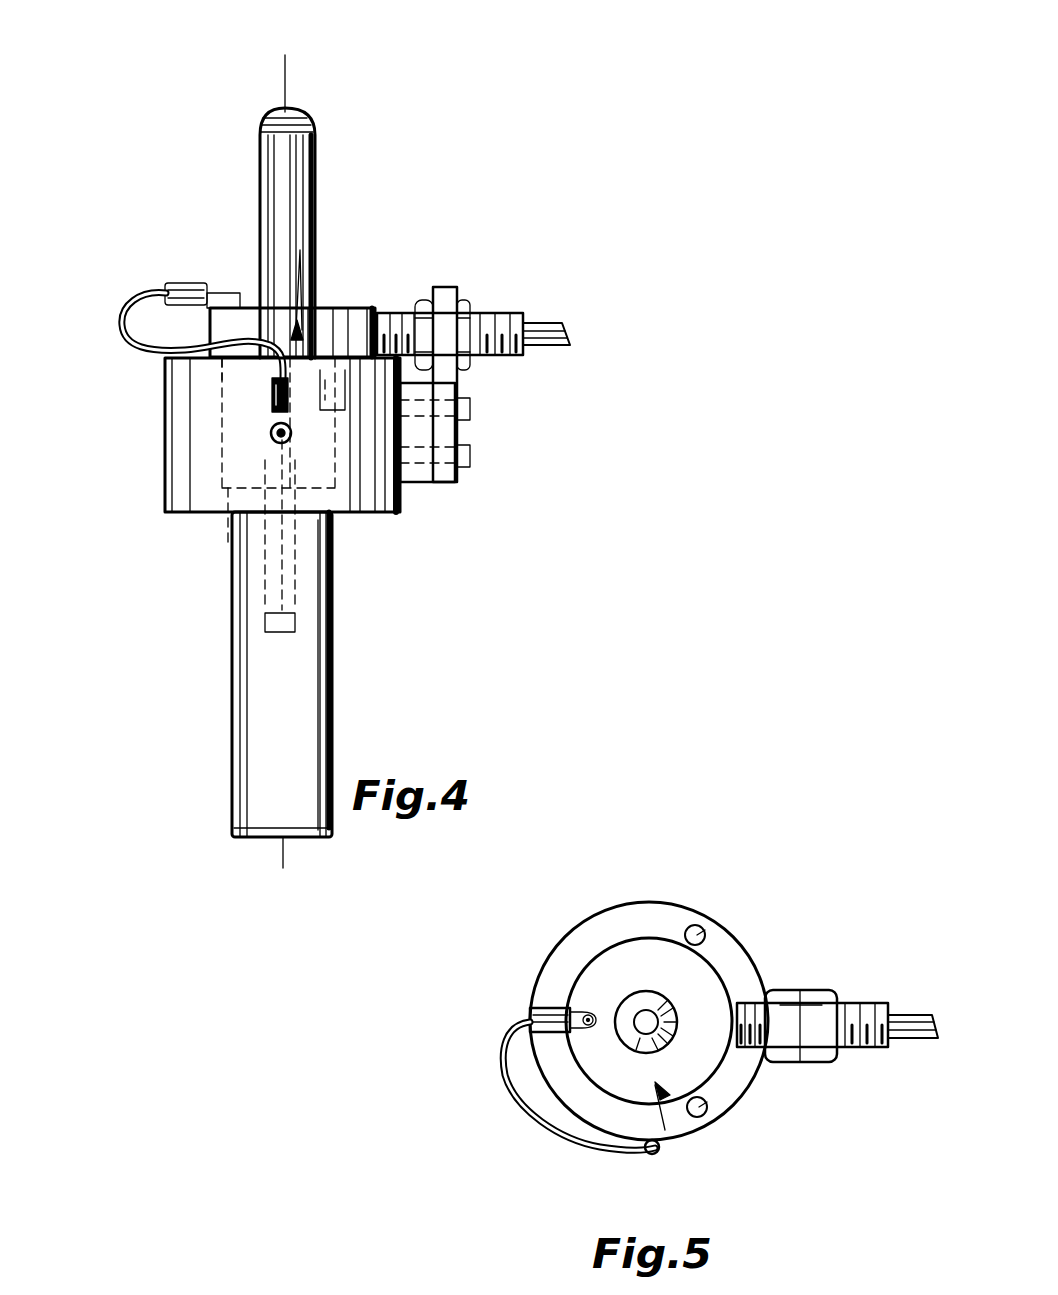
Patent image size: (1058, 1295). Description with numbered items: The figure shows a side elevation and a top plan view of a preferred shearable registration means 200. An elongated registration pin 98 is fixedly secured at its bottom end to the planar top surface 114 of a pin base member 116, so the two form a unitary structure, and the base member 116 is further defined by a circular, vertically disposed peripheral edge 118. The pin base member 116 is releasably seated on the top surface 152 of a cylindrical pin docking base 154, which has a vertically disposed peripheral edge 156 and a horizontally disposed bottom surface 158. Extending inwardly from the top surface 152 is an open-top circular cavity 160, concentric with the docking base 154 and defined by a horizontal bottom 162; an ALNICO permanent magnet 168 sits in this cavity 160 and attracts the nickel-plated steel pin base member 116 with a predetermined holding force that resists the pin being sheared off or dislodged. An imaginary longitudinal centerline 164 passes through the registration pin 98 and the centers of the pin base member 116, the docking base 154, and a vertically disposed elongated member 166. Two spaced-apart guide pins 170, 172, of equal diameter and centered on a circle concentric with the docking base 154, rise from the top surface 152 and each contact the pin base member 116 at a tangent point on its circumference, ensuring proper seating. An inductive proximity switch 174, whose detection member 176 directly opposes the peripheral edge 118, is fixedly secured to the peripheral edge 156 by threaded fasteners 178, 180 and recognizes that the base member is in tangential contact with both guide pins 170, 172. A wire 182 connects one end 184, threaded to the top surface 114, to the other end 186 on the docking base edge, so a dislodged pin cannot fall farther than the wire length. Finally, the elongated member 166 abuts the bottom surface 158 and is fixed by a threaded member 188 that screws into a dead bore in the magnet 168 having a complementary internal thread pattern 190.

In FIG. 4, the registration pin 98 is at (258, 205).
In FIG. 5, the registration pin 98 is at (630, 1010).
In FIG. 4, the top surface of pin base member 114 is at (360, 315).
In FIG. 5, the top surface of pin base member 114 is at (568, 988).
In FIG. 4, the pin base member 116 is at (295, 270).
In FIG. 5, the pin base member 116 is at (665, 1130).
In FIG. 5, the peripheral edge of pin base member 118 is at (745, 1060).
In FIG. 4, the top surface of pin docking base 152 is at (200, 328).
In FIG. 5, the top surface of pin docking base 152 is at (672, 920).
In FIG. 4, the pin docking base 154 is at (205, 470).
In FIG. 5, the pin docking base 154 is at (745, 930).
In FIG. 5, the peripheral edge of docking base 156 is at (548, 942).
In FIG. 4, the bottom surface of docking base 158 is at (390, 512).
In FIG. 4, the cavity 160 is at (210, 432).
In FIG. 5, the cavity 160 is at (628, 940).
In FIG. 4, the bottom of cavity 162 is at (228, 512).
In FIG. 4, the longitudinal centerline 164 is at (283, 87).
In FIG. 4, the elongated member 166 is at (232, 658).
In FIG. 4, the permanent magnet 168 is at (256, 445).
In FIG. 4, the guide pin 170 is at (332, 315).
In FIG. 5, the guide pin 170 is at (715, 1100).
In FIG. 5, the guide pin 172 is at (705, 930).
In FIG. 4, the inductive proximity switch 174 is at (548, 316).
In FIG. 5, the inductive proximity switch 174 is at (928, 975).
In FIG. 5, the detection member 176 is at (748, 985).
In FIG. 4, the threaded fastener 178 is at (475, 460).
In FIG. 4, the threaded fastener 180 is at (475, 410).
In FIG. 4, the wire 182 is at (130, 300).
In FIG. 5, the wire 182 is at (585, 1140).
In FIG. 4, the end of wire 184 is at (186, 294).
In FIG. 5, the end of wire 184 is at (530, 1000).
In FIG. 4, the other end of wire 186 is at (270, 395).
In FIG. 5, the other end of wire 186 is at (652, 1160).
In FIG. 4, the threaded member 188 is at (332, 700).
In FIG. 4, the internal thread pattern 190 is at (260, 530).
In FIG. 4, the registration means 200 is at (490, 272).